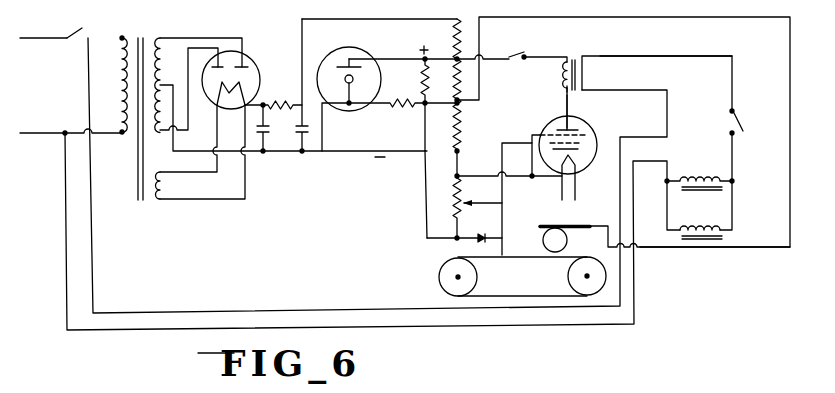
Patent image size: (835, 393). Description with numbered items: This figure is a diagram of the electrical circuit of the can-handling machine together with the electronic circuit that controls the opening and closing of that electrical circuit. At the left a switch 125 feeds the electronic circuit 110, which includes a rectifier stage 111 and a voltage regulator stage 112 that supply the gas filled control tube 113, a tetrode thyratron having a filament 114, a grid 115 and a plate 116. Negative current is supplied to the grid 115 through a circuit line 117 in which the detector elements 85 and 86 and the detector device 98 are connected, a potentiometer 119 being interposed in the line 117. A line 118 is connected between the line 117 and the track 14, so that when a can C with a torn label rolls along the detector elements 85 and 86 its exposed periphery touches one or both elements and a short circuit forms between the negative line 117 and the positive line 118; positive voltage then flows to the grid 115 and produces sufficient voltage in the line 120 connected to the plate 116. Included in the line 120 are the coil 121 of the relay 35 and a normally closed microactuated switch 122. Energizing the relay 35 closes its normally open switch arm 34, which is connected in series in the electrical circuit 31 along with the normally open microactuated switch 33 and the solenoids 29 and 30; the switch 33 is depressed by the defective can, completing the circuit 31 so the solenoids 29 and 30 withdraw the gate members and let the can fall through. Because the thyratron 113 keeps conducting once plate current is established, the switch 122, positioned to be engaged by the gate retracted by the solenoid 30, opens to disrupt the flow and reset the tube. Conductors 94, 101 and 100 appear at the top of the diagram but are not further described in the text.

The main switch 125 is at (78, 29).
The rectifier stage 111 is at (216, 200).
The voltage regulator stage 112 is at (362, 47).
The circuit line 117 is at (456, 160).
The potentiometer 119 is at (472, 193).
The electronic circuit 110 is at (423, 199).
The detector device 98 is at (475, 247).
The detector element 85 is at (530, 283).
The detector element 86 is at (519, 295).
The track 14 is at (575, 207).
The can C is at (567, 239).
The normally closed switch 122 is at (511, 51).
The relay 35 is at (561, 73).
The switch arm 34 is at (586, 82).
The coil 121 is at (562, 88).
The line 120 is at (565, 105).
The electrical circuit 31 is at (713, 53).
The gas filled control tube 113 is at (607, 134).
The plate 116 is at (571, 126).
The grid 115 is at (583, 138).
The filament 114 is at (575, 163).
The normally open microactuated switch 33 is at (726, 122).
The solenoid 29 is at (695, 176).
The solenoid 30 is at (710, 206).
The line 118 is at (750, 248).
The conductor 94 is at (645, 7).
The conductor 101 is at (539, 5).
The conductor 100 is at (578, 5).